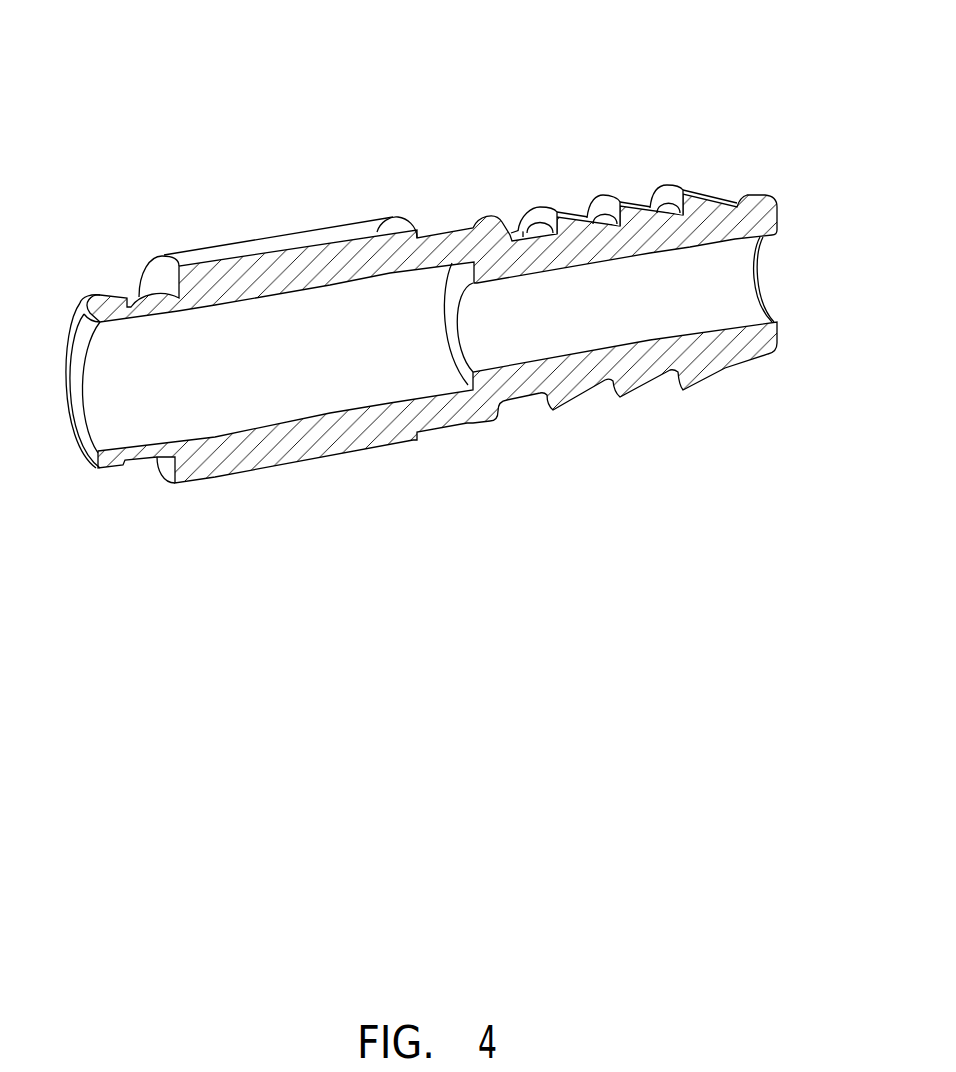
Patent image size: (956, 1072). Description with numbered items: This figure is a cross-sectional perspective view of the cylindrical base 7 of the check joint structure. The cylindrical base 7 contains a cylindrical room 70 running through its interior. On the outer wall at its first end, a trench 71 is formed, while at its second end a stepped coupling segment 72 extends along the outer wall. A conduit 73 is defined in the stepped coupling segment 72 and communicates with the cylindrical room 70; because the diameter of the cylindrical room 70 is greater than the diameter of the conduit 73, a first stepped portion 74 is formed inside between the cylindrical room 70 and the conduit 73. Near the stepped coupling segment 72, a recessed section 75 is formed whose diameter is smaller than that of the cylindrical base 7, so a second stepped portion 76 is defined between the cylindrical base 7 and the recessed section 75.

The cylindrical base 7 is at (270, 243).
The cylindrical room 70 is at (350, 343).
The trench 71 is at (140, 300).
The stepped coupling segment 72 is at (640, 370).
The conduit 73 is at (710, 305).
The first stepped portion 74 is at (468, 385).
The recessed section 75 is at (477, 224).
The second stepped portion 76 is at (447, 222).